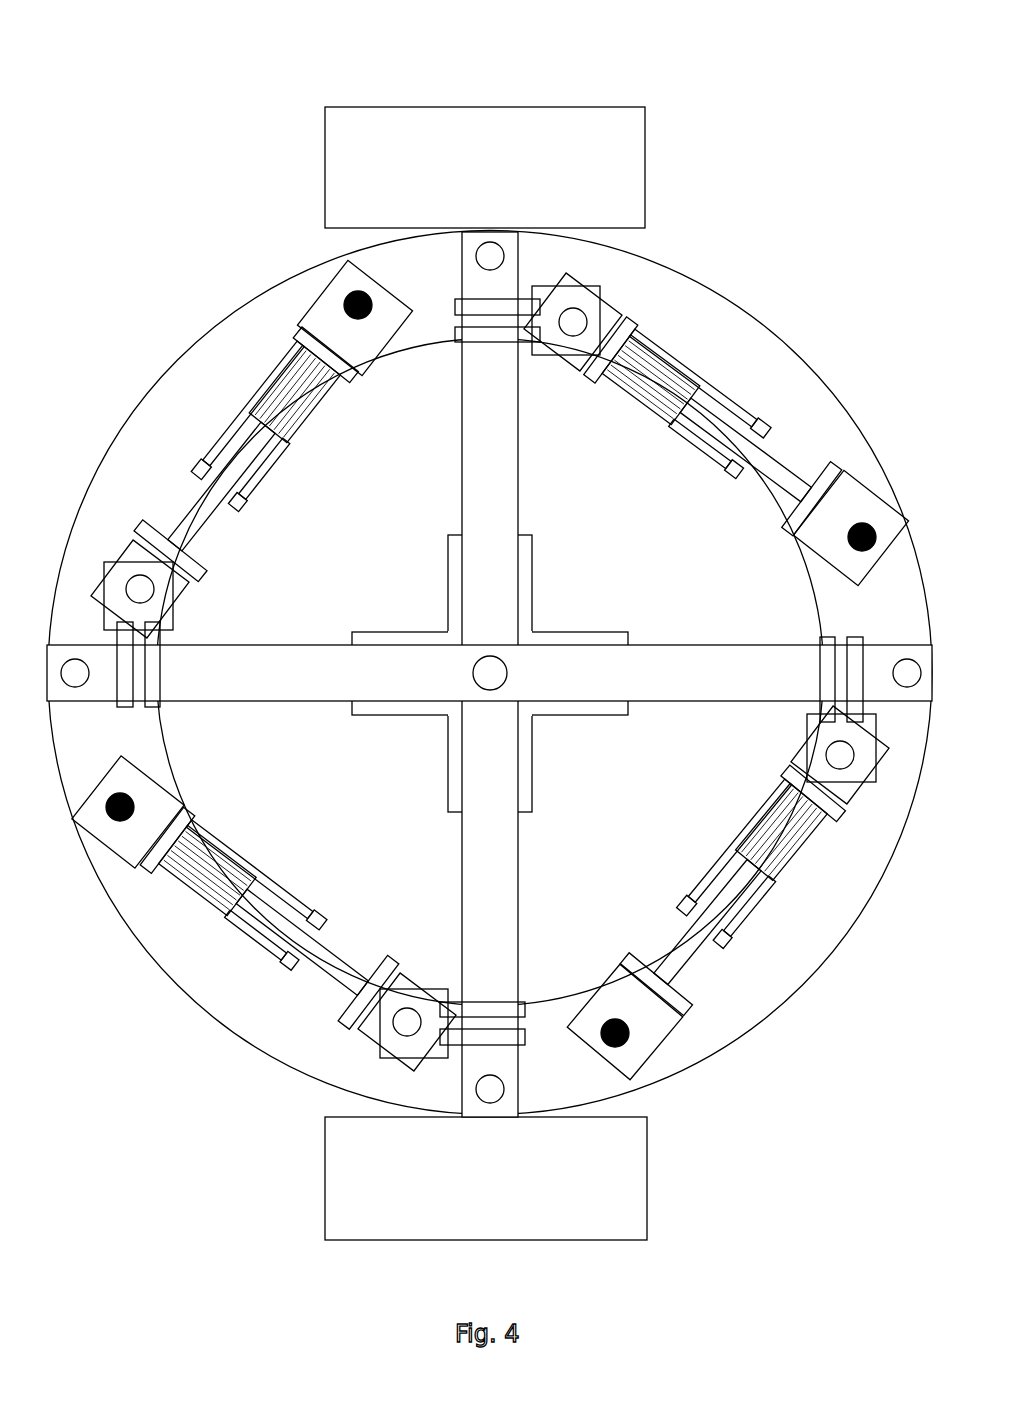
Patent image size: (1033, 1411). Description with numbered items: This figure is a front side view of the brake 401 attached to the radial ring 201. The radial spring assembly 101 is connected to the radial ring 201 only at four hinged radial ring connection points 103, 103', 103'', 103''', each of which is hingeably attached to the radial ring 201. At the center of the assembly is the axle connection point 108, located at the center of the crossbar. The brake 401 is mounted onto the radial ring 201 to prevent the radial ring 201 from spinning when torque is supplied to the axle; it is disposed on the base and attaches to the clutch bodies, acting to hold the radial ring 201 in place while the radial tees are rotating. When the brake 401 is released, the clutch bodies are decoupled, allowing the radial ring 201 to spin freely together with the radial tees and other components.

The radial spring assembly 101 is at (172, 165).
The radial ring connection point 103 is at (747, 449).
The radial ring connection point 103' is at (712, 981).
The radial ring connection point 103'' is at (217, 892).
The radial ring connection point 103''' is at (254, 420).
The axle connection point 108 is at (493, 675).
The radial ring 201 is at (700, 322).
The brake 401 is at (432, 107).